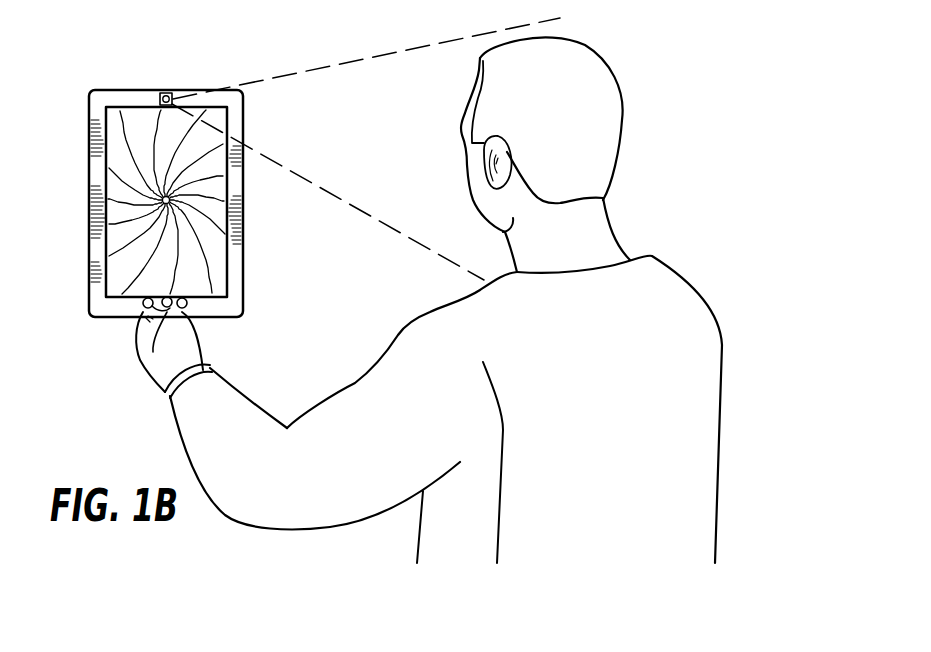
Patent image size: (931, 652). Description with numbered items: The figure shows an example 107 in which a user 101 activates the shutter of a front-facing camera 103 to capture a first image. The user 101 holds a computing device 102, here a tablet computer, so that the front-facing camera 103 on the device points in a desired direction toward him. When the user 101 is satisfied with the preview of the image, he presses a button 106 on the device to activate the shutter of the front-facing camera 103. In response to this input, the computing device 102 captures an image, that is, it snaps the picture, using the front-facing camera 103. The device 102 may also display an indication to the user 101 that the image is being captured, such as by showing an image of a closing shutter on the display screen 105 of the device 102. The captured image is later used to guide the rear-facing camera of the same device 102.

The user 101 is at (592, 125).
The computing device 102 is at (115, 90).
The front-facing camera 103 is at (163, 92).
The display screen 105 is at (120, 187).
The button 106 is at (195, 310).
The example 107 is at (465, 300).